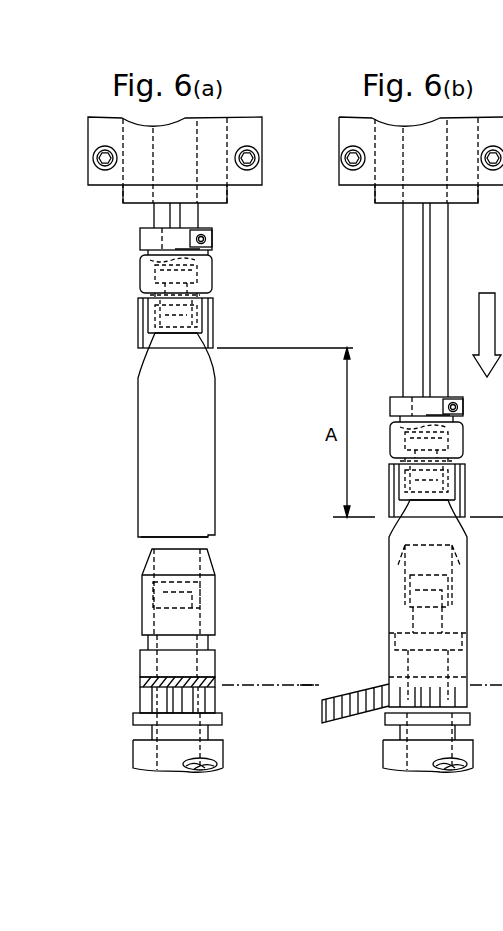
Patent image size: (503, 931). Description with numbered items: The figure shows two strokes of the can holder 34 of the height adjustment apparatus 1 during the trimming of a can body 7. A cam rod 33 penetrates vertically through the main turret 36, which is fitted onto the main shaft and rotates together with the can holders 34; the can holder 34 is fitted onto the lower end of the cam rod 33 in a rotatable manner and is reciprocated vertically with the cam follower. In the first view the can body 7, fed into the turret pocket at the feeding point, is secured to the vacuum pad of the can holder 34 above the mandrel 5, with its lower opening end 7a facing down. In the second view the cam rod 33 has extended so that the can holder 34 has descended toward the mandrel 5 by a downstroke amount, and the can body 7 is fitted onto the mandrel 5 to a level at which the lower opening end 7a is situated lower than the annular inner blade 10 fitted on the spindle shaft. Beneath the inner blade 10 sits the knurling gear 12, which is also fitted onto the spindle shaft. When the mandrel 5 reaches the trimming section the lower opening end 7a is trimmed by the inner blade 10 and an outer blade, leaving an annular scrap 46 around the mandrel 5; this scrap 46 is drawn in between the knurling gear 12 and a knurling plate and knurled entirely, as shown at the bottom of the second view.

In FIG. 6B, the height adjustment apparatus 1 is at (470, 708).
In FIG. 6A, the mandrel 5 is at (142, 568).
In FIG. 6B, the mandrel 5 is at (470, 540).
In FIG. 6A, the can body 7 is at (138, 402).
In FIG. 6B, the can body 7 is at (389, 536).
In FIG. 6A, the lower opening end 7a is at (208, 537).
In FIG. 6A, the inner blade 10 is at (140, 683).
In FIG. 6A, the knurling gear 12 is at (140, 705).
In FIG. 6A, the cam rod 33 is at (157, 218).
In FIG. 6B, the cam rod 33 is at (404, 231).
In FIG. 6A, the can holder 34 is at (138, 320).
In FIG. 6B, the can holder 34 is at (465, 481).
In FIG. 6A, the main turret 36 is at (95, 137).
In FIG. 6B, the main turret 36 is at (345, 136).
In FIG. 6B, the annular scrap 46 is at (322, 722).